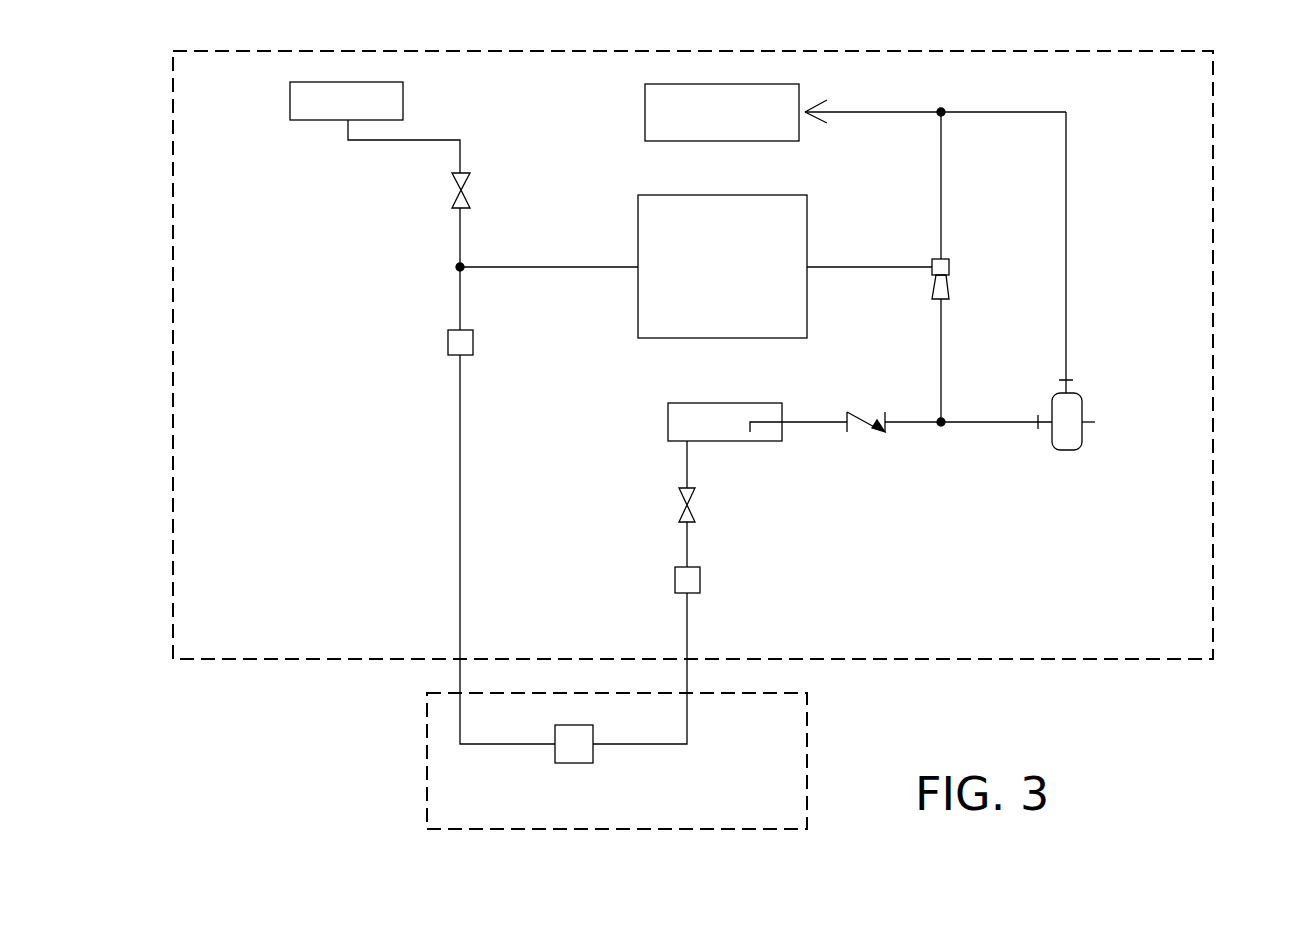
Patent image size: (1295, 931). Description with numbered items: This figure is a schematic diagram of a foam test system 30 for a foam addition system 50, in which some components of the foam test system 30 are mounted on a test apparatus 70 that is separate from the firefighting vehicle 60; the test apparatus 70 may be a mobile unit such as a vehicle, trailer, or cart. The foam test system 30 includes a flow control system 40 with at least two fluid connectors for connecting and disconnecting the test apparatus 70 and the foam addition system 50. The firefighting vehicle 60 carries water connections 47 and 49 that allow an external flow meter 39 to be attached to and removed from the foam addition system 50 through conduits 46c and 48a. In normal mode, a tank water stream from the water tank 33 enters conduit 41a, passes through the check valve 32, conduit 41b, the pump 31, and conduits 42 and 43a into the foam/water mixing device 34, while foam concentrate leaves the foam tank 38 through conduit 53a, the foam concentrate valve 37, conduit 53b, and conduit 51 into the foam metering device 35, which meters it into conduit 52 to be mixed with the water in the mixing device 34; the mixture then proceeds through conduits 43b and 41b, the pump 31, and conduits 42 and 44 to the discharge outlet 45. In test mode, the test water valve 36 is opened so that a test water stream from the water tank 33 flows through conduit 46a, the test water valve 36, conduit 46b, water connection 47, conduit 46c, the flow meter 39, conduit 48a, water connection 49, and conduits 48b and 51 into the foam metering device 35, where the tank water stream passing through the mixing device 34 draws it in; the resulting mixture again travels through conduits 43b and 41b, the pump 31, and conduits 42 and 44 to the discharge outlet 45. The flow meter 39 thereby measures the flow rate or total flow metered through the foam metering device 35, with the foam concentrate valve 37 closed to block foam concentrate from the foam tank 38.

The foam test system 30 is at (396, 690).
The pump 31 is at (1082, 410).
The check valve 32 is at (862, 425).
The water tank 33 is at (745, 403).
The foam/water mixing device 34 is at (949, 267).
The foam metering device 35 is at (745, 195).
The test water valve 36 is at (695, 508).
The foam concentrate valve 37 is at (470, 195).
The foam tank 38 is at (403, 100).
The flow meter 39 is at (565, 763).
The flow control system 40 is at (415, 267).
The conduit 41a is at (808, 422).
The conduit 41b is at (988, 422).
The conduit 42 is at (1066, 245).
The conduit 43a is at (941, 190).
The conduit 43b is at (941, 358).
The conduit 44 is at (860, 112).
The discharge outlet 45 is at (645, 112).
The conduit 46a is at (687, 465).
The conduit 46b is at (687, 550).
The conduit 46c is at (687, 625).
The water connection 47 is at (700, 580).
The conduit 48a is at (461, 550).
The conduit 48b is at (460, 307).
The water connection 49 is at (473, 342).
The foam addition system 50 is at (1092, 150).
The conduit 51 is at (554, 267).
The conduit 52 is at (860, 267).
The conduit 53a is at (405, 140).
The conduit 53b is at (460, 238).
The firefighting vehicle 60 is at (1213, 152).
The test apparatus 70 is at (807, 745).